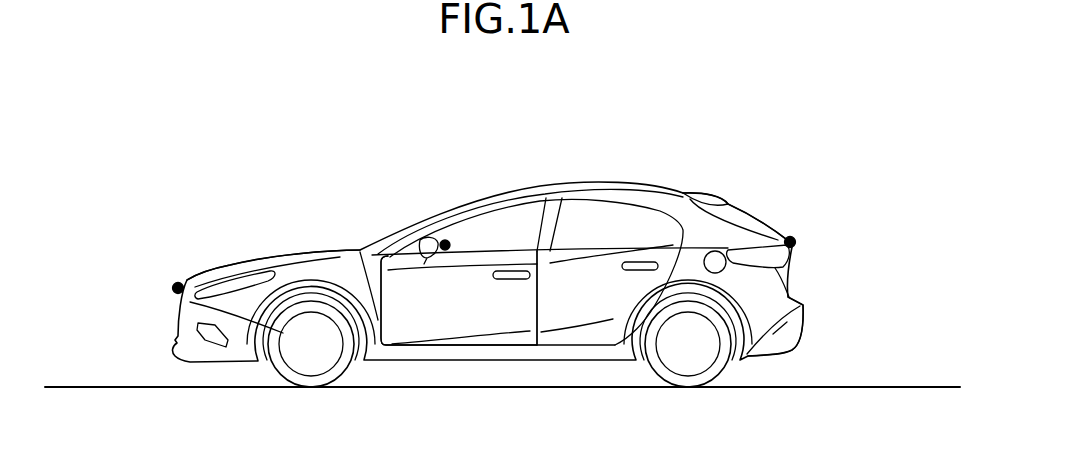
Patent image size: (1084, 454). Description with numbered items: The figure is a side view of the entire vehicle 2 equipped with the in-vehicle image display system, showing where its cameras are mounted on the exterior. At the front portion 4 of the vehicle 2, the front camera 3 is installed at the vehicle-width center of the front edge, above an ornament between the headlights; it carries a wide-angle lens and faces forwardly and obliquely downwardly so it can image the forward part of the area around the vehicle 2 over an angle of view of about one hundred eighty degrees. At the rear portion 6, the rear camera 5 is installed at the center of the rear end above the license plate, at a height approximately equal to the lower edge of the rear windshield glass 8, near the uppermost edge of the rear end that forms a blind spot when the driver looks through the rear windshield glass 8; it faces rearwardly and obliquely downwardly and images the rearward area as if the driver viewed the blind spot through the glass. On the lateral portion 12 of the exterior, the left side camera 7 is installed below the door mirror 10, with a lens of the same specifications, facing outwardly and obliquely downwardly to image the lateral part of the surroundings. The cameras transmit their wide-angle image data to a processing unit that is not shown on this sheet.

The vehicle 2 is at (627, 159).
The front camera 3 is at (177, 284).
The front portion 4 is at (262, 260).
The rear camera 5 is at (797, 240).
The rear portion 6 is at (791, 277).
The left side camera 7 is at (446, 241).
The rear windshield glass 8 is at (752, 220).
The door mirror 10 is at (427, 241).
The lateral portion 12 is at (473, 320).